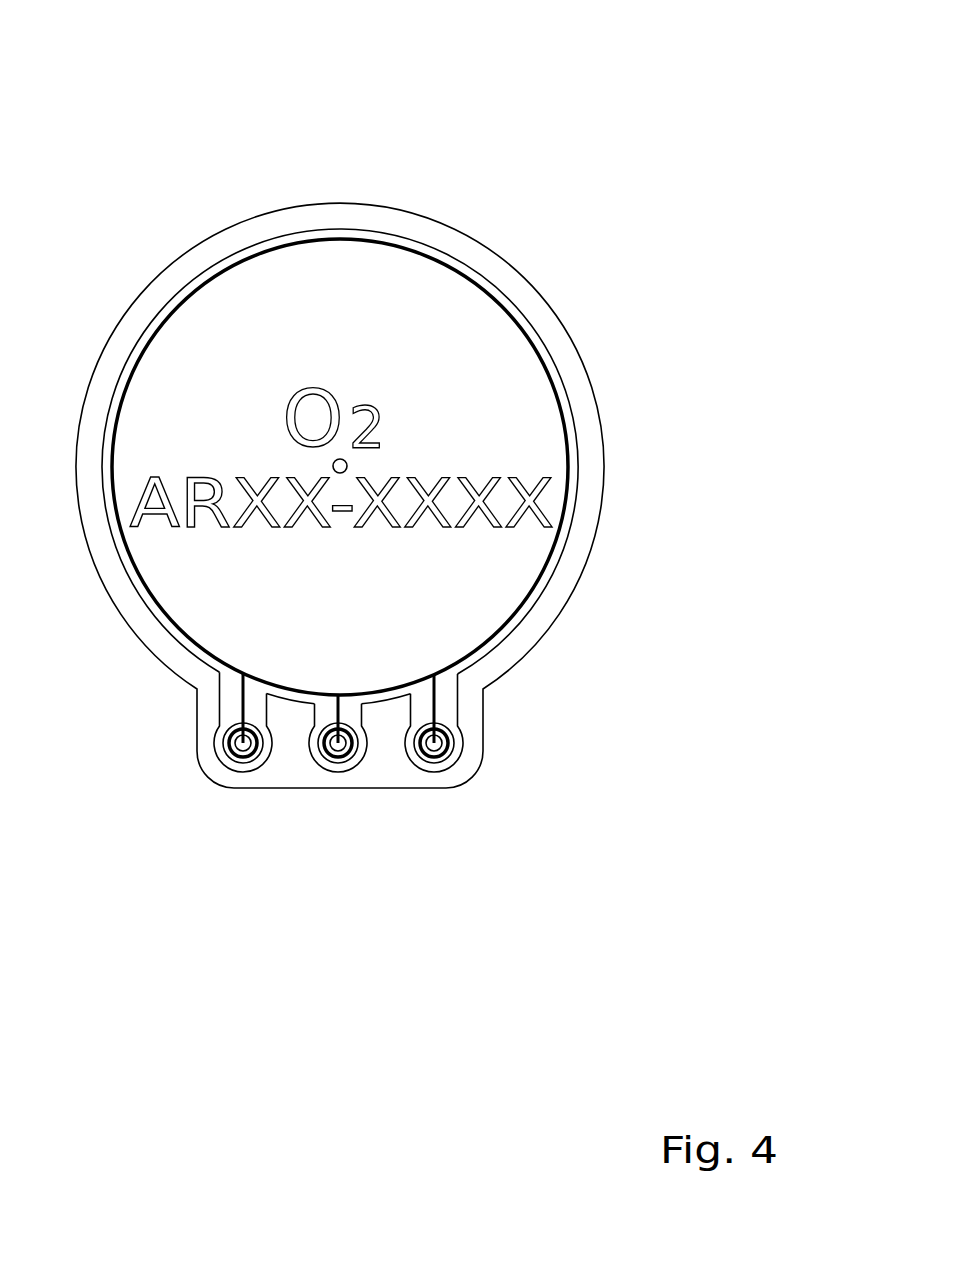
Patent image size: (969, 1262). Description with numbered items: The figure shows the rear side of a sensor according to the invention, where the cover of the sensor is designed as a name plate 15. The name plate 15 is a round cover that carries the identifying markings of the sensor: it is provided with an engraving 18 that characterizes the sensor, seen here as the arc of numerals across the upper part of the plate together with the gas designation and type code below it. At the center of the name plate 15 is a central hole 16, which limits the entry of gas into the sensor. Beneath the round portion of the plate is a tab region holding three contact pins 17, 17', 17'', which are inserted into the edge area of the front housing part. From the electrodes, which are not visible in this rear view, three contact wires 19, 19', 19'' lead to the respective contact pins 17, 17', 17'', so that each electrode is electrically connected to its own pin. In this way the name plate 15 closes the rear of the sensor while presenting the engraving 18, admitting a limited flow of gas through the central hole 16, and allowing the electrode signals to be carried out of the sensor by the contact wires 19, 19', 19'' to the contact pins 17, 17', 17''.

The name plate 15 is at (440, 283).
The central hole 16 is at (347, 465).
The contact pin 17 is at (192, 853).
The contact pin 17' is at (312, 864).
The contact pin 17'' is at (435, 854).
The engraving 18 is at (334, 270).
The contact wire 19 is at (166, 815).
The contact wire 19' is at (287, 831).
The contact wire 19'' is at (401, 816).